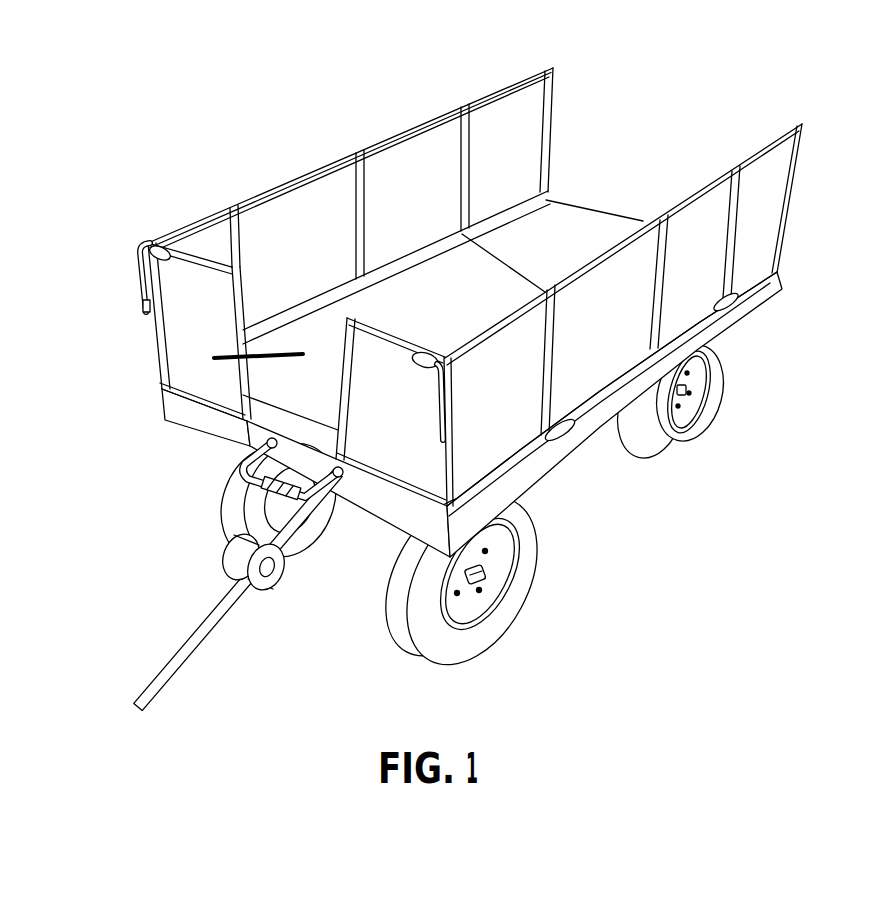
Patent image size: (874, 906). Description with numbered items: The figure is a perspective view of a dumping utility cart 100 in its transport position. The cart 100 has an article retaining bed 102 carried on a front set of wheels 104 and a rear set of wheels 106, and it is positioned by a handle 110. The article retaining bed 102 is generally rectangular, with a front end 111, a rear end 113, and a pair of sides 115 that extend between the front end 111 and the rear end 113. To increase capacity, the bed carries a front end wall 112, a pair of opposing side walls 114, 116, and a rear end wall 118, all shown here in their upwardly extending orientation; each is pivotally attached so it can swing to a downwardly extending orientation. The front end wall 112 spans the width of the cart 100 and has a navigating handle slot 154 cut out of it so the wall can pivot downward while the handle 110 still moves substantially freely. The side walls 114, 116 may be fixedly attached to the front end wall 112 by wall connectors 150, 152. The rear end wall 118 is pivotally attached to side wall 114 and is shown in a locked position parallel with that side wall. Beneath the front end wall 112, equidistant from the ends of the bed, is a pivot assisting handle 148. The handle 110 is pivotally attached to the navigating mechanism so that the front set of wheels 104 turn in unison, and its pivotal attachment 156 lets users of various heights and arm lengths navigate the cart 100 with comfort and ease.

The dumping utility cart 100 is at (457, 380).
The article retaining bed 102 is at (463, 240).
The front set of wheels 104 is at (383, 607).
The rear set of wheels 106 is at (722, 366).
The handle 110 is at (197, 640).
The front end 111 is at (381, 516).
The front end wall 112 is at (177, 383).
The rear end 113 is at (613, 216).
The side wall 114 is at (320, 203).
The sides 115 is at (320, 297).
The side wall 116 is at (773, 202).
The rear end wall 118 is at (464, 96).
The pivot assisting handle 148 is at (230, 463).
The wall connector 150 is at (137, 279).
The wall connector 152 is at (447, 386).
The navigating handle slot 154 is at (233, 357).
The pivotal attachment 156 is at (230, 557).